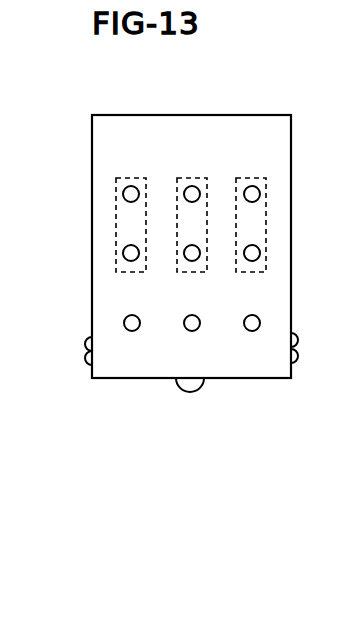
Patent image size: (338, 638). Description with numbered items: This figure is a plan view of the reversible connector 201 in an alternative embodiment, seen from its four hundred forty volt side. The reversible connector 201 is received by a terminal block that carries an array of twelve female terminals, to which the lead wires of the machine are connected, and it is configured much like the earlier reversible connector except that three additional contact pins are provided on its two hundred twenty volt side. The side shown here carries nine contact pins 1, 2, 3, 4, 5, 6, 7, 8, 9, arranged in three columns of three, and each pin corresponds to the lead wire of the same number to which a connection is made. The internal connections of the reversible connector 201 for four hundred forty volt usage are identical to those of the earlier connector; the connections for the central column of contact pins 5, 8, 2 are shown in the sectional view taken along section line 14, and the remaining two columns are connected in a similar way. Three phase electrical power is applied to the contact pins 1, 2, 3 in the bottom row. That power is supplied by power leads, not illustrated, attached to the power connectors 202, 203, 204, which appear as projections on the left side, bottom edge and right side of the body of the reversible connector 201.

The contact pin 1 is at (245, 331).
The contact pin 2 is at (185, 331).
The contact pin 3 is at (128, 331).
The contact pin 4 is at (252, 186).
The contact pin 5 is at (192, 186).
The contact pin 6 is at (131, 186).
The contact pin 7 is at (244, 254).
The contact pin 8 is at (184, 254).
The contact pin 9 is at (123, 254).
The section line 14 is at (193, 114).
The reversible connector 201 is at (223, 406).
The power connector 202 is at (80, 368).
The power connector 203 is at (177, 385).
The power connector 204 is at (302, 365).